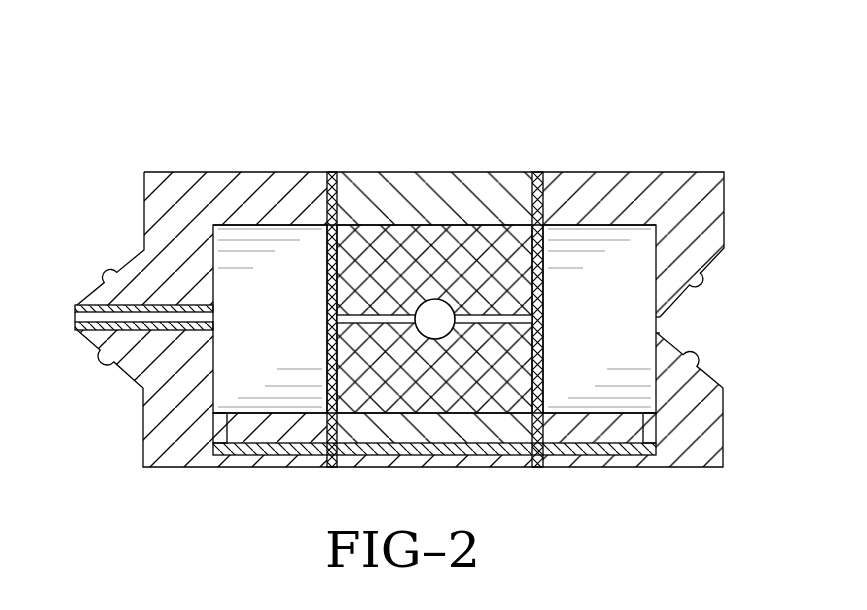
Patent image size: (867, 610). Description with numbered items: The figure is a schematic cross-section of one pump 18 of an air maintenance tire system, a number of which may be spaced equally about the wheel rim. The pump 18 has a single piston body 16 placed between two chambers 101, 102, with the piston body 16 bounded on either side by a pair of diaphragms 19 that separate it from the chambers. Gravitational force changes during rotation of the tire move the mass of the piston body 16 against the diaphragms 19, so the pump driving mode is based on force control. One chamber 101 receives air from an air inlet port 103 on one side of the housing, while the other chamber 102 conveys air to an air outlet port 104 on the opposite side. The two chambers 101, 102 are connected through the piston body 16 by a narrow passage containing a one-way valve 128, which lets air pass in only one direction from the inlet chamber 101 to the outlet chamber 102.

The pump 18 is at (634, 138).
The diaphragm 19 is at (332, 175).
The piston body 16 is at (438, 258).
The one-way valve 128 is at (434, 312).
The chamber 101 is at (243, 336).
The chamber 102 is at (577, 336).
The air inlet port 103 is at (85, 320).
The air outlet port 104 is at (657, 322).